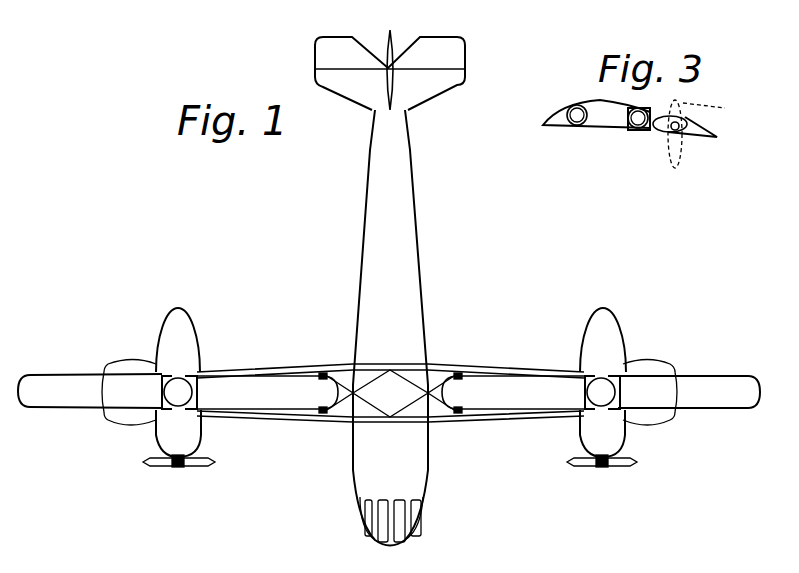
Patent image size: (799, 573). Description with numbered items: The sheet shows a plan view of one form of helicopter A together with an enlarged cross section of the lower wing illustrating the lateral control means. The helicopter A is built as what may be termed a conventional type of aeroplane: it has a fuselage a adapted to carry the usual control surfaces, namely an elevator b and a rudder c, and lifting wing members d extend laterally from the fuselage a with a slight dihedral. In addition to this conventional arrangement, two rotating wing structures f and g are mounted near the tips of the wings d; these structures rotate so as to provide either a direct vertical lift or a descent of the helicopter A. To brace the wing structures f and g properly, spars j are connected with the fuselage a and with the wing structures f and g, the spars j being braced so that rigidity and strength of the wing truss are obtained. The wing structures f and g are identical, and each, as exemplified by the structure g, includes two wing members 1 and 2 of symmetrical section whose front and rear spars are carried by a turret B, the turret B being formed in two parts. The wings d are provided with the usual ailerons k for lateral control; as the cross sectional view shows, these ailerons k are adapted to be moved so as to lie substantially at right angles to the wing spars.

In FIG. 1, the fuselage a is at (430, 287).
In FIG. 1, the elevator b is at (445, 67).
In FIG. 1, the rudder c is at (394, 42).
In FIG. 1, the lifting wing members d is at (263, 362).
In FIG. 1, the rotating wing structure f is at (200, 379).
In FIG. 1, the rotating wing structure g is at (638, 378).
In FIG. 1, the spars j is at (347, 419).
In FIG. 1, the turret B is at (175, 393).
In FIG. 1, the wing member 1 is at (548, 400).
In FIG. 1, the wing member 2 is at (703, 400).
In FIG. 1, the helicopter A is at (480, 464).
In FIG. 3, the ailerons k is at (700, 124).